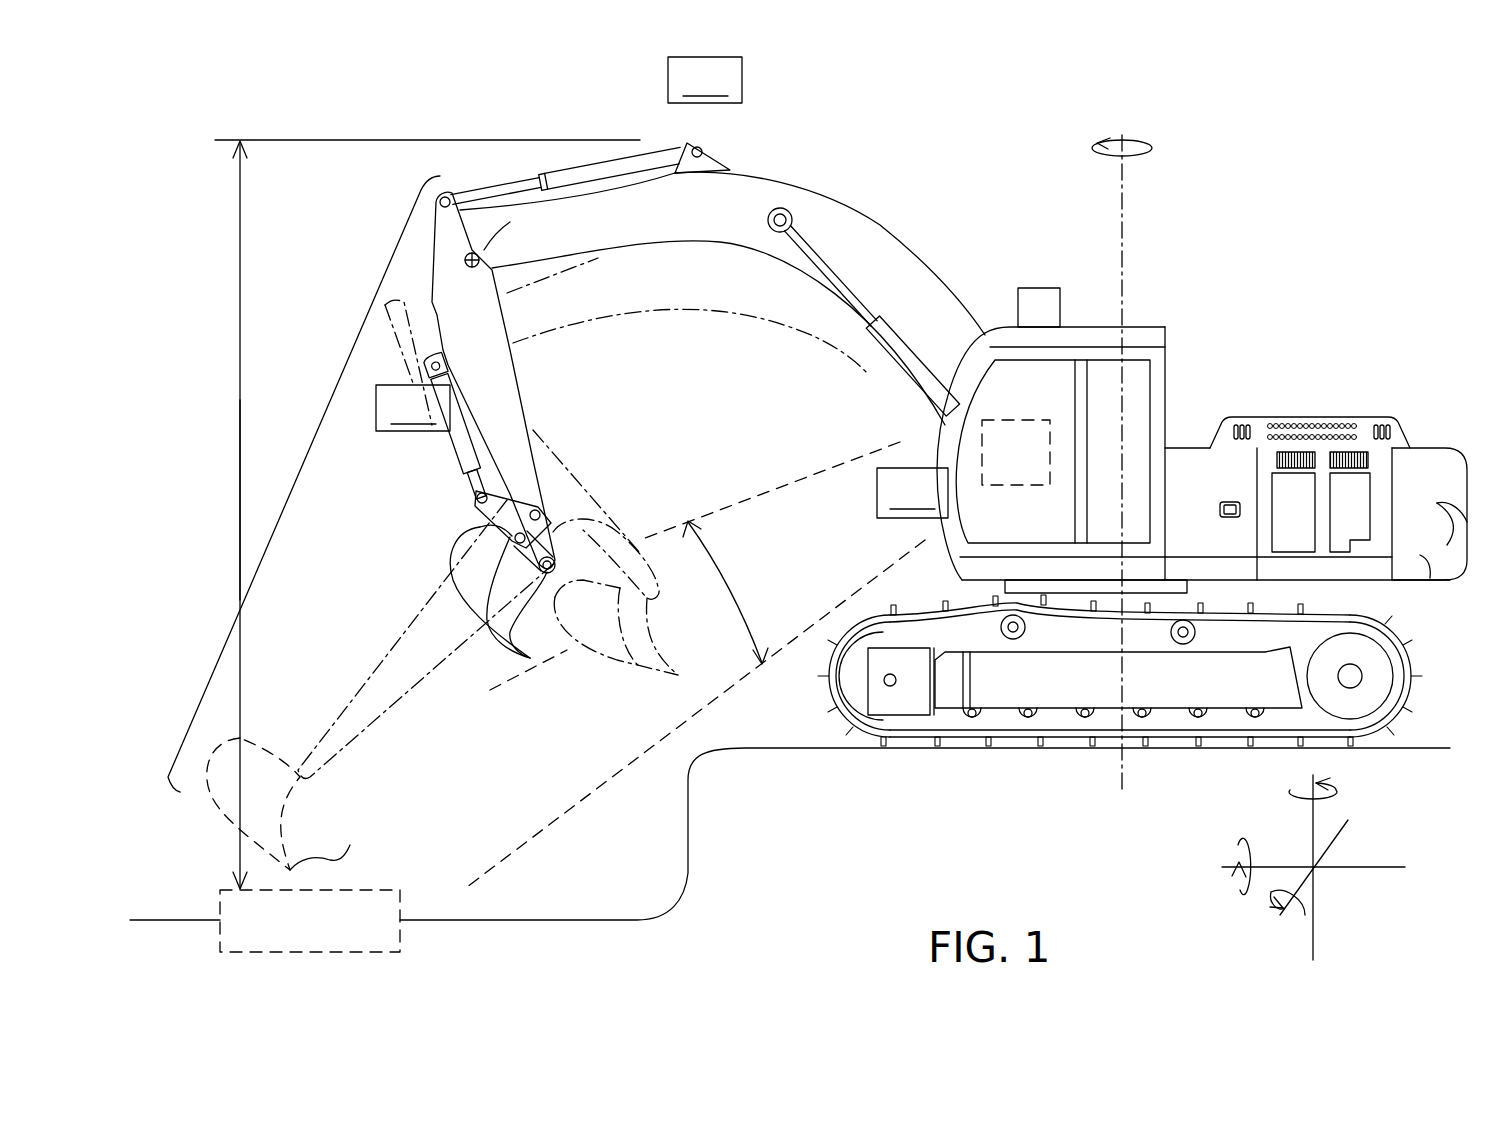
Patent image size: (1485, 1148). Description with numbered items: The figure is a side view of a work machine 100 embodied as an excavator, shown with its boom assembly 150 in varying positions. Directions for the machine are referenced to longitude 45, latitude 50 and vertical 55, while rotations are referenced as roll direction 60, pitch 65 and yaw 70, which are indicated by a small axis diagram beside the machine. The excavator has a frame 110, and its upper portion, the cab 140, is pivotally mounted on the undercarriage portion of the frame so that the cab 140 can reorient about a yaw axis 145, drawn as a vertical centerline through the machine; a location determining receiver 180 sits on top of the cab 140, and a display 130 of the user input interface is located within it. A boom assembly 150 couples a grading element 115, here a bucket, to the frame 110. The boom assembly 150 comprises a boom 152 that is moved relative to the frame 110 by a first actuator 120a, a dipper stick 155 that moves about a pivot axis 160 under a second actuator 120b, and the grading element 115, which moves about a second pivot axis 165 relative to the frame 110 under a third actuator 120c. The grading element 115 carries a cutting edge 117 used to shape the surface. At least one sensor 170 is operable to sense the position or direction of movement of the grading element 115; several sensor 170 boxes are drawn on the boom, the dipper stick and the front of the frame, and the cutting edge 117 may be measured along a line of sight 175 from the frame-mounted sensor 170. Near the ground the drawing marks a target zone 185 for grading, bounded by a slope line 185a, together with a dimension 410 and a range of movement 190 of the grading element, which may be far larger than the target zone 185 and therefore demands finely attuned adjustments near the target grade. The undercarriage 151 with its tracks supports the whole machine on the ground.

The work machine 100 is at (923, 420).
The frame 110 is at (1432, 402).
The grading element 115 is at (200, 800).
The cutting edge 117 is at (342, 847).
The first actuator 120a is at (905, 398).
The second actuator 120b is at (578, 178).
The third actuator 120c is at (458, 457).
The display 130 is at (1040, 468).
The cab 140 is at (1078, 315).
The yaw axis 145 is at (1128, 195).
The boom assembly 150 is at (383, 102).
The undercarriage 151 is at (1080, 696).
The boom 152 is at (863, 255).
The dipper stick 155 is at (480, 332).
The pivot axis 160 is at (468, 255).
The second pivot axis 165 is at (617, 525).
The sensor 170 is at (662, 287).
The line of sight 175 is at (695, 566).
The location determining receiver 180 is at (1032, 310).
The target zone 185 is at (334, 935).
The slope line 185a is at (423, 920).
The range of movement 190 is at (318, 416).
The height dimension 410 is at (172, 515).
The longitude 45 is at (1385, 867).
The latitude 50 is at (1348, 826).
The vertical 55 is at (1313, 822).
The roll direction 60 is at (1232, 882).
The pitch 65 is at (1272, 902).
The yaw 70 is at (1148, 143).